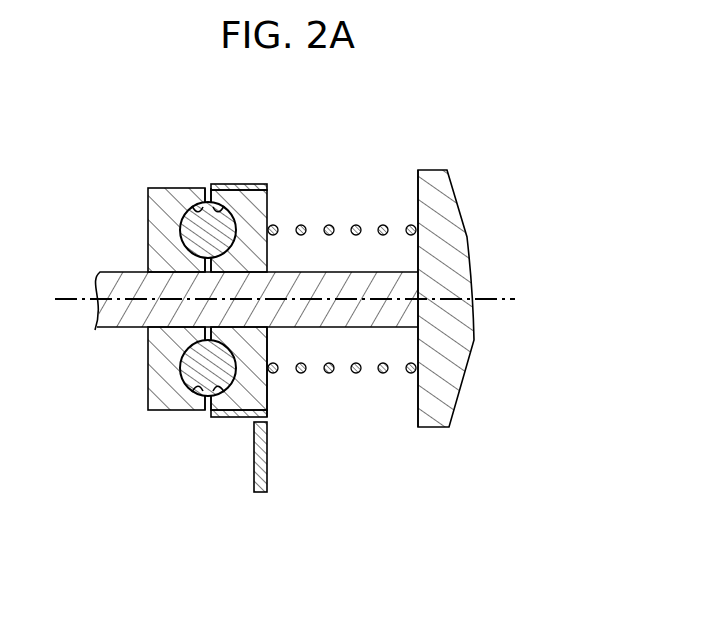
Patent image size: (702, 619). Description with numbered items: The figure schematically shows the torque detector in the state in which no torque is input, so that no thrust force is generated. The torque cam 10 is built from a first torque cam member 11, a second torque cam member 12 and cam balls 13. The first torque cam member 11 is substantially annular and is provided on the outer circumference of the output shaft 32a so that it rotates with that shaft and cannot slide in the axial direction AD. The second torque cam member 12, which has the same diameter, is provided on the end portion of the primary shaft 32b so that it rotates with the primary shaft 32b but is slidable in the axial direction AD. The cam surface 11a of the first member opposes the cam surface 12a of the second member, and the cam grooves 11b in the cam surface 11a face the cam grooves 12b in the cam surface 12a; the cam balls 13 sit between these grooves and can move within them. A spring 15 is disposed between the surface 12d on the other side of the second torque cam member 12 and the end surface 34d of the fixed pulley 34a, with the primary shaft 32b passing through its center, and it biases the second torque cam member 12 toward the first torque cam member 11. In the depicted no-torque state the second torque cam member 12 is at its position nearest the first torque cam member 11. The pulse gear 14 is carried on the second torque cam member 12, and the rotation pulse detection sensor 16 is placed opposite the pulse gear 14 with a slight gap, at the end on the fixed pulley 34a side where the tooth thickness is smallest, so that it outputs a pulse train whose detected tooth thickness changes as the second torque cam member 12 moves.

The torque cam 10 is at (141, 164).
The first torque cam member 11 is at (160, 198).
The cam surface 11a is at (207, 412).
The cam grooves 11b is at (199, 212).
The second torque cam member 12 is at (268, 194).
The cam surface 12a is at (206, 198).
The cam grooves 12b is at (216, 212).
The surface 12d is at (267, 392).
The cam balls 13 is at (180, 233).
The pulse gear 14 is at (245, 186).
The spring 15 is at (357, 374).
The rotation pulse detection sensor 16 is at (261, 493).
The output shaft 32a is at (107, 275).
The primary shaft 32b is at (373, 281).
The fixed pulley 34a is at (440, 170).
The end surface 34d is at (418, 182).
The axial direction AD is at (495, 298).